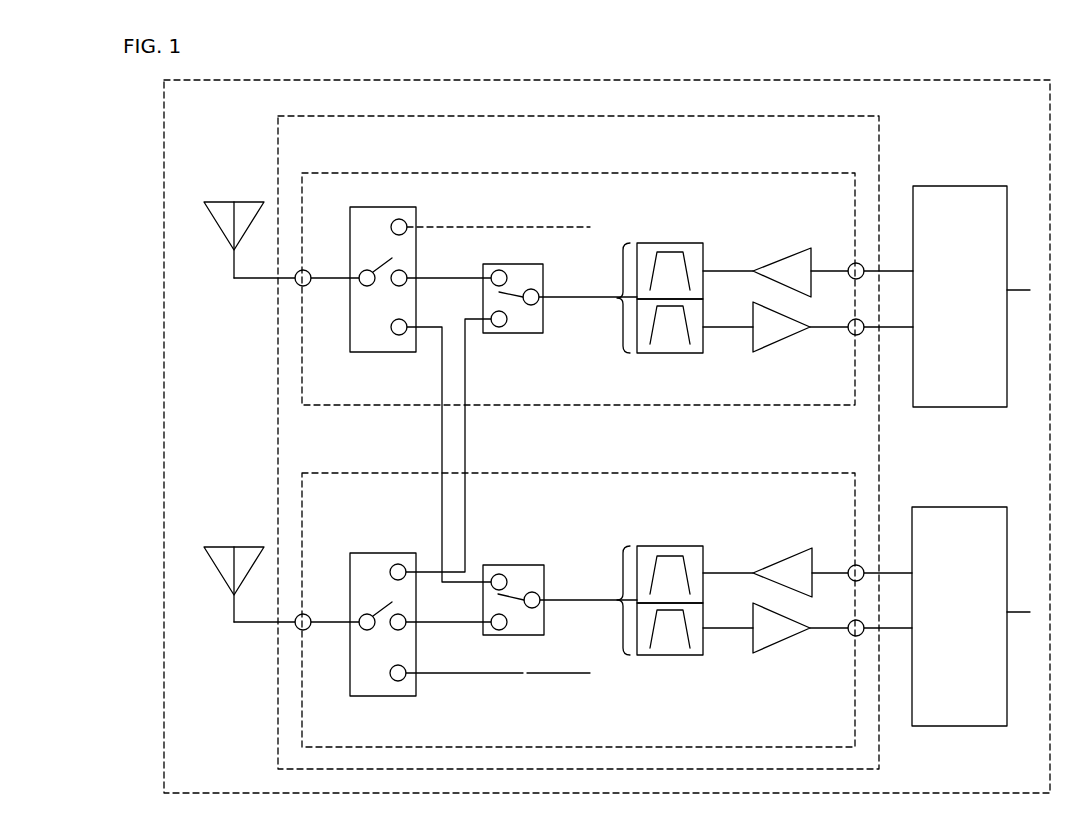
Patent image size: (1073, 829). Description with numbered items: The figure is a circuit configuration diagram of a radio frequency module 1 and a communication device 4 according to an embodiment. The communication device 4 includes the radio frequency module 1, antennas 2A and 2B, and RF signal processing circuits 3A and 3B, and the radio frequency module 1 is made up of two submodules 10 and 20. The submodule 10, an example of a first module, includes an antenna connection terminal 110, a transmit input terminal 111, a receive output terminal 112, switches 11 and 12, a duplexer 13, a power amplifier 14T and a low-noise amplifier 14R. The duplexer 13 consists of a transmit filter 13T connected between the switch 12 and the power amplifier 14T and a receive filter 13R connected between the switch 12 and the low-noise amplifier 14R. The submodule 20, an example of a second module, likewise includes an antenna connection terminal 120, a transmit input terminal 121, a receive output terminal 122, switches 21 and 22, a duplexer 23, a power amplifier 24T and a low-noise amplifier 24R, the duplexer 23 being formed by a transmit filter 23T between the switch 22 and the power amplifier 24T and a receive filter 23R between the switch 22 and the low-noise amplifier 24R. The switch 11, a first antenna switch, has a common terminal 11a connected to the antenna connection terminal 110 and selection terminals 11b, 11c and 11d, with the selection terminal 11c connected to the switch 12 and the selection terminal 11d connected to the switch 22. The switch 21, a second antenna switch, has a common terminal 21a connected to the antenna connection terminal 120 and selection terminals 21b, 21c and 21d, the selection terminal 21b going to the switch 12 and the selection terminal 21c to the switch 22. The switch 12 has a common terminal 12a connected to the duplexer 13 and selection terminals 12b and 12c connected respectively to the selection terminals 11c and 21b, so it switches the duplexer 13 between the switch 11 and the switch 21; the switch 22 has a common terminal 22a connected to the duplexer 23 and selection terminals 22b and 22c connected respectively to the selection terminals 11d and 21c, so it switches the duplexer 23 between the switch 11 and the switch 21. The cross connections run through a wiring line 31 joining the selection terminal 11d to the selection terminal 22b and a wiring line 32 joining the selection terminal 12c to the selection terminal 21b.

The communication device 4 is at (1015, 80).
The radio frequency module 1 is at (773, 116).
The submodule 10 is at (773, 173).
The submodule 20 is at (775, 473).
The antenna 2A is at (225, 202).
The antenna 2B is at (225, 547).
The RF signal processing circuit 3A is at (972, 185).
The RF signal processing circuit 3B is at (970, 507).
The switch 11 is at (391, 285).
The common terminal 11a is at (360, 286).
The selection terminal 11b is at (407, 225).
The selection terminal 11c is at (408, 284).
The selection terminal 11d is at (398, 351).
The switch 12 is at (527, 306).
The common terminal 12a is at (539, 295).
The selection terminal 12b is at (497, 271).
The selection terminal 12c is at (502, 330).
The duplexer 13 is at (649, 298).
The transmit filter 13T is at (653, 243).
The receive filter 13R is at (653, 355).
The power amplifier 14T is at (782, 256).
The low-noise amplifier 14R is at (767, 352).
The antenna connection terminal 110 is at (296, 286).
The transmit input terminal 111 is at (848, 267).
The receive output terminal 112 is at (848, 336).
The switch 21 is at (389, 628).
The common terminal 21a is at (358, 632).
The selection terminal 21b is at (409, 581).
The selection terminal 21c is at (408, 630).
The selection terminal 21d is at (398, 688).
The switch 22 is at (538, 600).
The common terminal 22a is at (538, 597).
The selection terminal 22b is at (498, 574).
The selection terminal 22c is at (500, 630).
The duplexer 23 is at (648, 601).
The transmit filter 23T is at (655, 546).
The receive filter 23R is at (655, 656).
The power amplifier 24T is at (782, 557).
The low-noise amplifier 24R is at (767, 653).
The antenna connection terminal 120 is at (296, 630).
The transmit input terminal 121 is at (848, 568).
The receive output terminal 122 is at (848, 637).
The wiring line 31 is at (438, 443).
The wiring line 32 is at (468, 441).